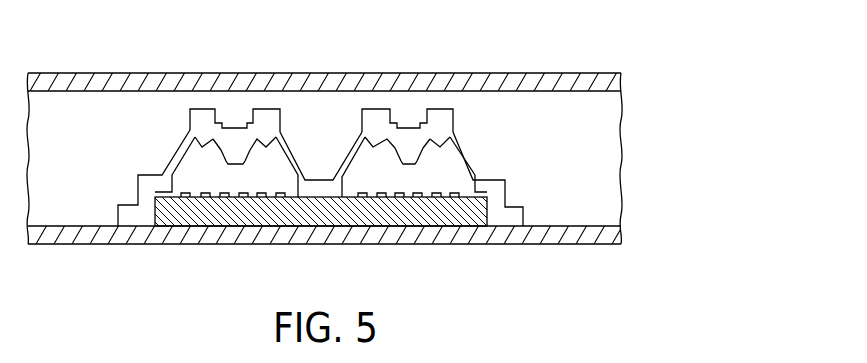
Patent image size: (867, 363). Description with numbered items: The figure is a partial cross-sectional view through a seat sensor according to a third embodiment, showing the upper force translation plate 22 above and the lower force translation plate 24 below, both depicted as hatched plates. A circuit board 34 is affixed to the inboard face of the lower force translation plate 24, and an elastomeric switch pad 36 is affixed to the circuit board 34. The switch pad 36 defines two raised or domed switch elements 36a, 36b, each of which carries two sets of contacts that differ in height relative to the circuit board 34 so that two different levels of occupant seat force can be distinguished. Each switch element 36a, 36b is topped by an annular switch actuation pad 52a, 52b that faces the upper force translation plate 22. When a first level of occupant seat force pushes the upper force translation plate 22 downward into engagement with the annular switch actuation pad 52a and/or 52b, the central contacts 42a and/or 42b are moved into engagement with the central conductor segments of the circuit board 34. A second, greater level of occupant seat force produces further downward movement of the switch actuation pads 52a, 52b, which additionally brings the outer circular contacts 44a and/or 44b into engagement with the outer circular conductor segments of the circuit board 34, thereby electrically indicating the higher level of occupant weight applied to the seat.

The upper force translation plate 22 is at (530, 81).
The lower force translation plate 24 is at (570, 238).
The circuit board 34 is at (315, 221).
The elastomeric switch pad 36 is at (134, 203).
The switch element 36a is at (197, 208).
The switch element 36b is at (442, 208).
The central contact 42a is at (235, 167).
The central contact 42b is at (408, 166).
The outer circular contact 44a is at (202, 149).
The outer circular contact 44b is at (440, 149).
The annular switch actuation pad 52a is at (192, 120).
The annular switch actuation pad 52b is at (450, 120).